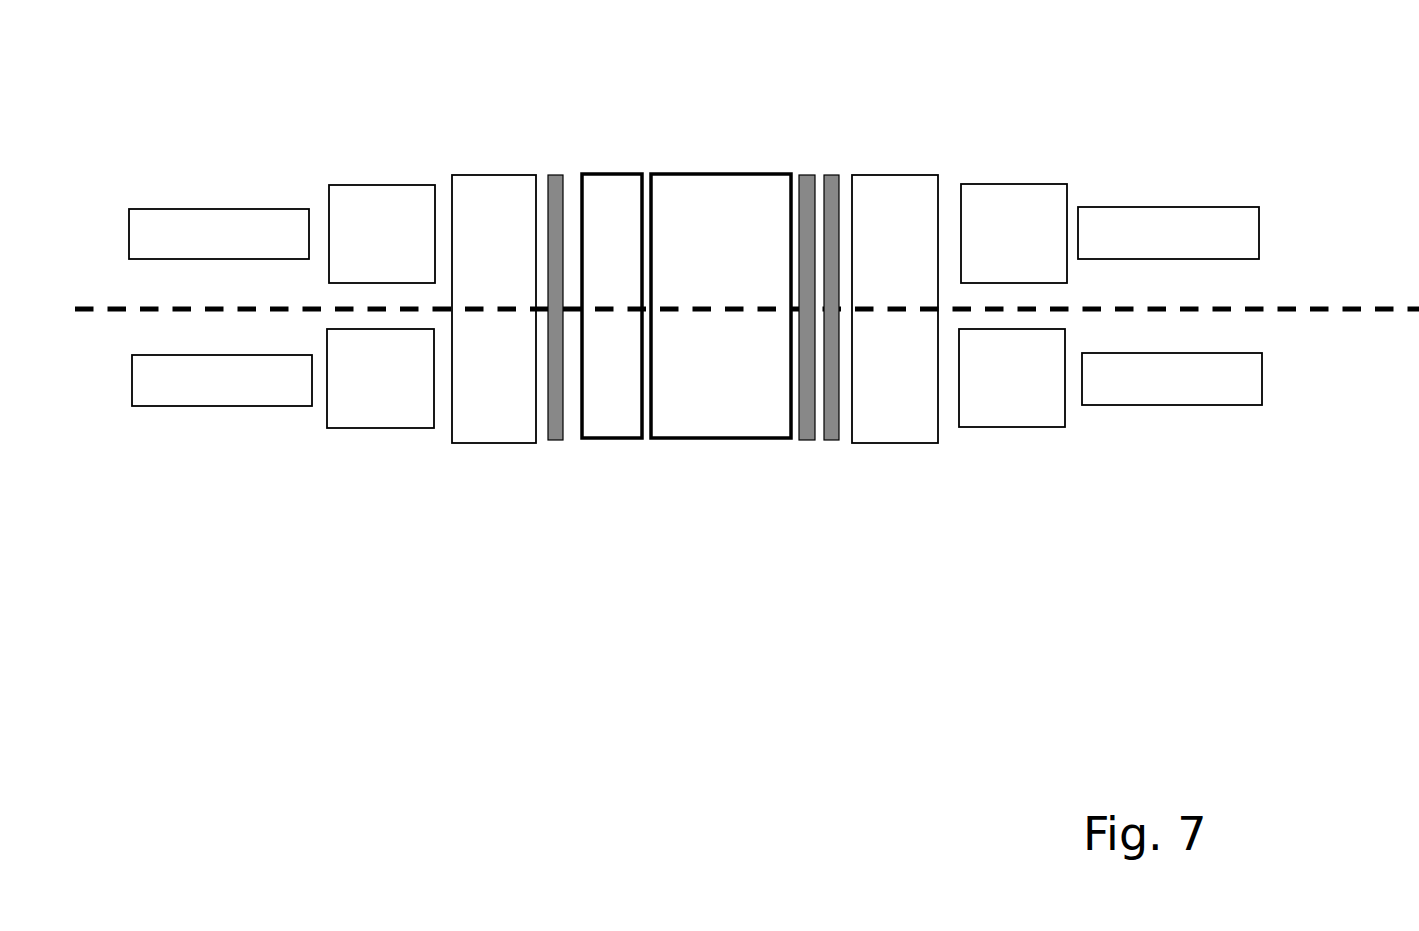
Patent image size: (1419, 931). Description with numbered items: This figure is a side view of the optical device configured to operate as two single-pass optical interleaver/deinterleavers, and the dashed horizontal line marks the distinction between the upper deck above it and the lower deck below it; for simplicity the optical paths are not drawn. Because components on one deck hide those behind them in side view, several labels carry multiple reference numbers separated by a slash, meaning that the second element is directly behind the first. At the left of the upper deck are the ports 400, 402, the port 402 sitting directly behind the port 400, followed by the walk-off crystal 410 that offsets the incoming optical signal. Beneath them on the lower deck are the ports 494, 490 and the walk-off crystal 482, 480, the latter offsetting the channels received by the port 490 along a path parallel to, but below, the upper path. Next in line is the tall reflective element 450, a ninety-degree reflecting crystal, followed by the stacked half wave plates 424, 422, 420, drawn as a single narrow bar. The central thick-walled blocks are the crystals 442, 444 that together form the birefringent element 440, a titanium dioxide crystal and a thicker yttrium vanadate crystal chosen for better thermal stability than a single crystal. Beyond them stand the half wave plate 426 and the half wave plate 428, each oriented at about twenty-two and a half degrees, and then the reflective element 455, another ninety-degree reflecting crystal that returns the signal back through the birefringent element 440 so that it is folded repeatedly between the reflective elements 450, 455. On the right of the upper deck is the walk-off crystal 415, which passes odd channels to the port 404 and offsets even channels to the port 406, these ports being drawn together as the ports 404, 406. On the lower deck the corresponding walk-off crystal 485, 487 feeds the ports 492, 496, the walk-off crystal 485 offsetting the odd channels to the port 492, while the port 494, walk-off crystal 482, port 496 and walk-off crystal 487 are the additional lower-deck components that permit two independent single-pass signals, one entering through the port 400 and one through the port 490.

The port 400 is at (219, 196).
The port 402 is at (217, 208).
The port 404 is at (1168, 180).
The port 406 is at (1167, 207).
The walk-off crystal 410 is at (383, 185).
The walk-off crystal 415 is at (1013, 183).
The half wave plate 420 is at (555, 442).
The half wave plate 422 is at (537, 416).
The half wave plate 424 is at (537, 416).
The half wave plate 426 is at (807, 442).
The half wave plate 428 is at (832, 175).
The birefringent element 440 is at (686, 300).
The crystal 442 is at (618, 170).
The crystal 444 is at (728, 173).
The reflective element 450 is at (495, 175).
The reflective element 455 is at (894, 175).
The walk-off crystal 480 is at (382, 428).
The walk-off crystal 482 is at (365, 446).
The walk-off crystal 485 is at (1027, 437).
The walk-off crystal 487 is at (1013, 428).
The port 490 is at (223, 405).
The port 492 is at (1180, 460).
The port 494 is at (222, 427).
The port 496 is at (1172, 406).